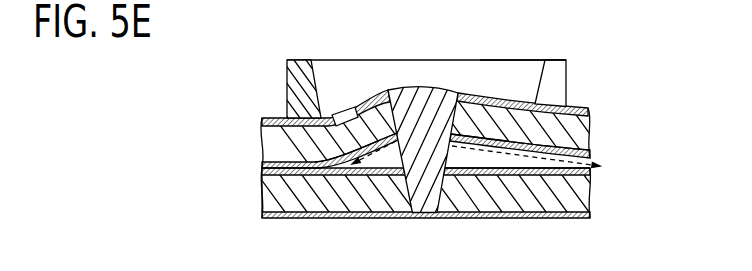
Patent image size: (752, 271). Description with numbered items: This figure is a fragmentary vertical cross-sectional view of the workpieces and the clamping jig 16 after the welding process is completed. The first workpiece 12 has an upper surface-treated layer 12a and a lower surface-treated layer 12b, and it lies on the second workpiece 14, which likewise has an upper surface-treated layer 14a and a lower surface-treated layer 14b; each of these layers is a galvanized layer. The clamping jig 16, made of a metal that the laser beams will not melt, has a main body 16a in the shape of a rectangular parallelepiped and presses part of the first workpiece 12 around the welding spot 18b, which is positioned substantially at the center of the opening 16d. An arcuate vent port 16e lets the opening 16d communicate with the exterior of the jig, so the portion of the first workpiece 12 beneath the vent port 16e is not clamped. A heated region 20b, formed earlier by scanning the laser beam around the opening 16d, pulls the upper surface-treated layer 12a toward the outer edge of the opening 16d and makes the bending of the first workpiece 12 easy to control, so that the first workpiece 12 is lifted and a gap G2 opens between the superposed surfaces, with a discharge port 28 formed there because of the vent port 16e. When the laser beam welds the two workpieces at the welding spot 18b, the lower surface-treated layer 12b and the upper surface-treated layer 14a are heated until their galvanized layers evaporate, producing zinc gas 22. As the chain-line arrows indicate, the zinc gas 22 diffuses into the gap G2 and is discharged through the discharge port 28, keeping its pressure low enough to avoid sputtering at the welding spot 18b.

The first workpiece 12 is at (451, 124).
The upper surface-treated layer 12a is at (588, 112).
The lower surface-treated layer 12b is at (590, 153).
The second workpiece 14 is at (410, 207).
The upper surface-treated layer 14a is at (263, 171).
The lower surface-treated layer 14b is at (273, 223).
The clamping jig 16 is at (428, 73).
The main body 16a is at (292, 80).
The opening 16d is at (525, 54).
The vent port 16e is at (573, 77).
The welding spot 18b is at (427, 87).
The heated region 20b is at (338, 115).
The zinc gas 22 is at (375, 150).
The discharge port 28 is at (598, 171).
The gap G2 is at (475, 163).